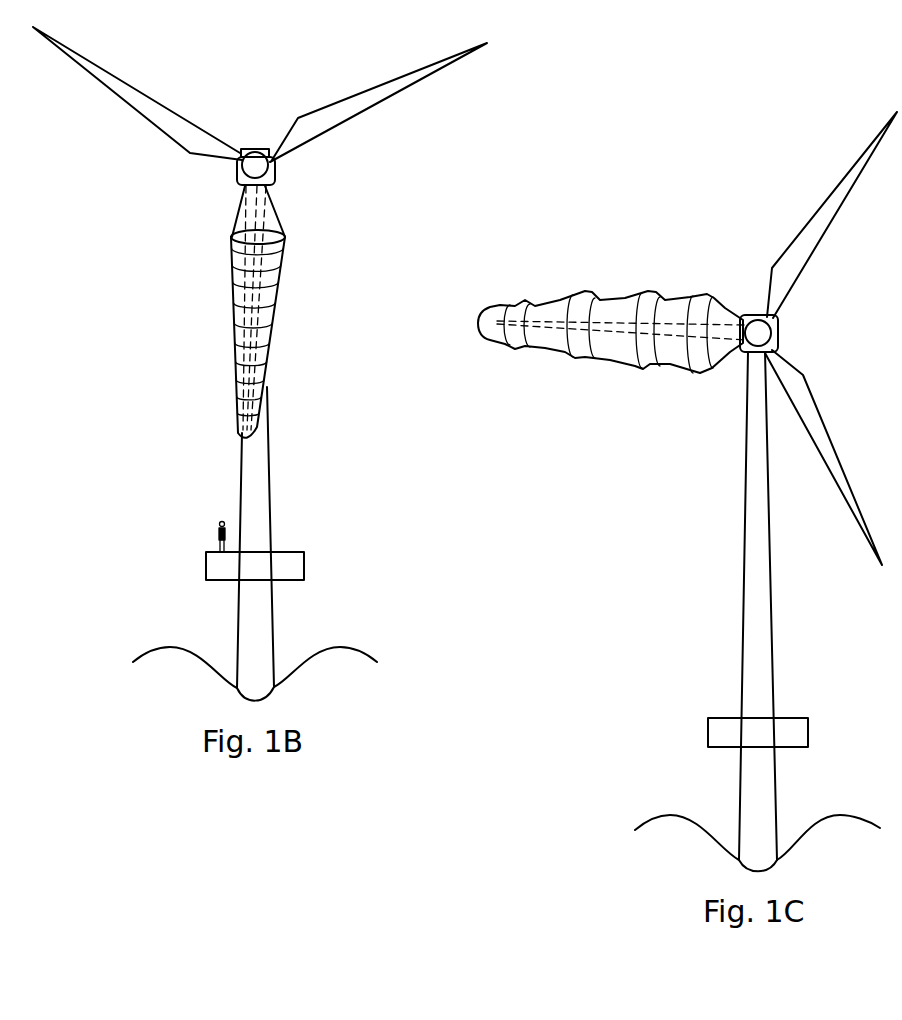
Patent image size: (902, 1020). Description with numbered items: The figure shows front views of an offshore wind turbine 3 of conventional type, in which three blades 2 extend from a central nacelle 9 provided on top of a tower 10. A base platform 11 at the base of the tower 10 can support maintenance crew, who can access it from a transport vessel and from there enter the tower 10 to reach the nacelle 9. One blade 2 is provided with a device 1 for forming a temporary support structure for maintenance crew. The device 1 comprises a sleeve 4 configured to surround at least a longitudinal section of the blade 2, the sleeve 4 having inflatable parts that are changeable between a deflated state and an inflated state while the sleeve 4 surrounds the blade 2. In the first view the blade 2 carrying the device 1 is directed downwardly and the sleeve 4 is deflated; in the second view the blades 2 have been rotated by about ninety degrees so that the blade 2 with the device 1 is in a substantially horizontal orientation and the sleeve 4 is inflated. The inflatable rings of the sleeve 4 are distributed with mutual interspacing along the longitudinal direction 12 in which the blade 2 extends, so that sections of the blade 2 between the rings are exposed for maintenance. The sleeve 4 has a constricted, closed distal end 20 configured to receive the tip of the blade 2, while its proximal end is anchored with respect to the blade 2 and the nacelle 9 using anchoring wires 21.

In FIG. 1B, the device 1 is at (184, 276).
In FIG. 1C, the device 1 is at (600, 257).
In FIG. 1B, the blade 2 is at (160, 112).
In FIG. 1C, the blade 2 is at (793, 273).
In FIG. 1B, the wind turbine 3 is at (384, 239).
In FIG. 1C, the wind turbine 3 is at (704, 148).
In FIG. 1B, the sleeve 4 is at (237, 332).
In FIG. 1C, the sleeve 4 is at (525, 302).
In FIG. 1B, the nacelle 9 is at (255, 160).
In FIG. 1C, the nacelle 9 is at (765, 333).
In FIG. 1B, the tower 10 is at (255, 489).
In FIG. 1C, the tower 10 is at (757, 655).
In FIG. 1B, the base platform 11 is at (230, 567).
In FIG. 1C, the base platform 11 is at (732, 733).
In FIG. 1B, the longitudinal direction 12 is at (107, 43).
In FIG. 1C, the longitudinal direction 12 is at (528, 383).
In FIG. 1B, the distal end 20 is at (220, 428).
In FIG. 1C, the distal end 20 is at (480, 349).
In FIG. 1B, the anchoring wires 21 is at (273, 202).
In FIG. 1C, the anchoring wires 21 is at (733, 313).